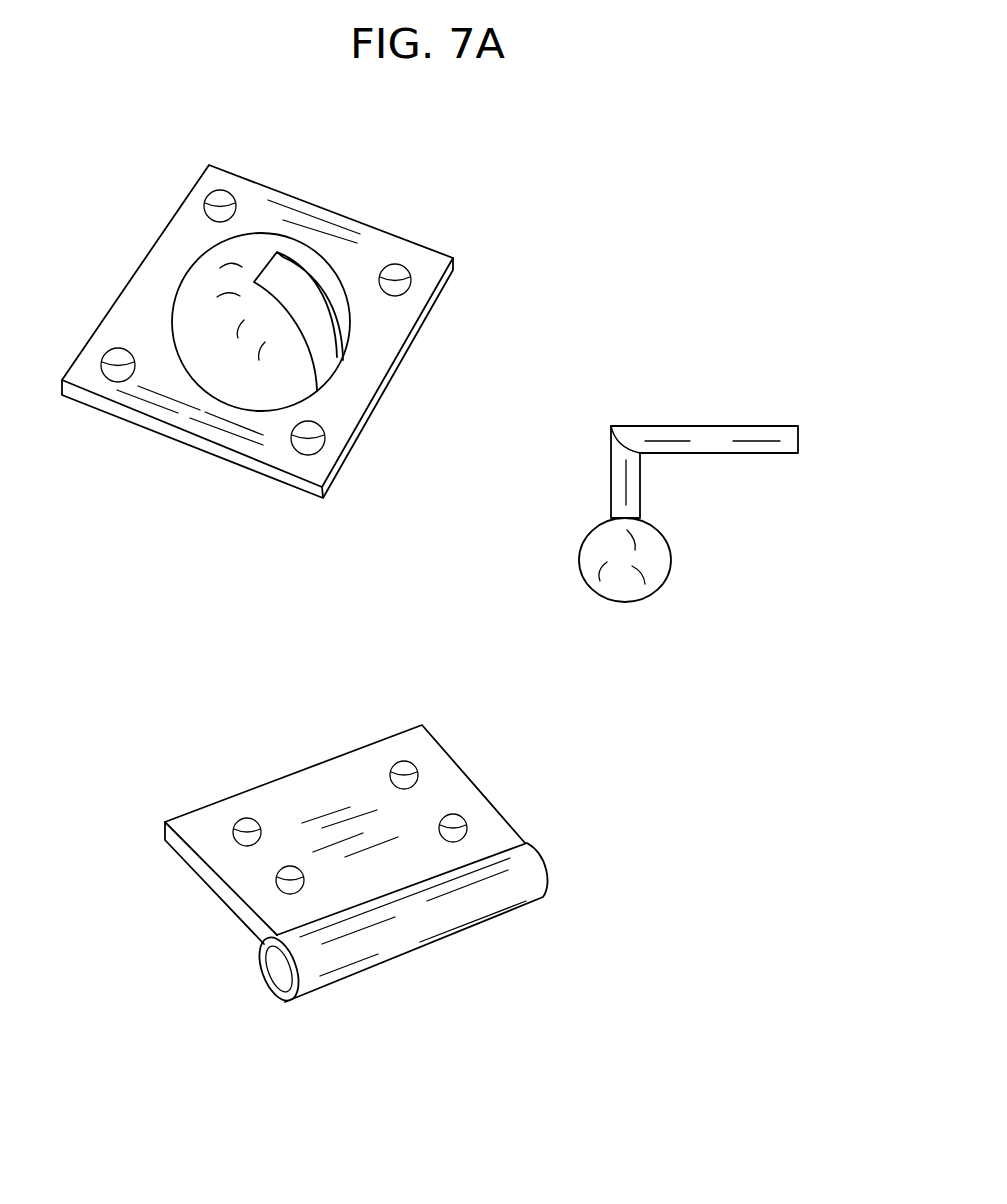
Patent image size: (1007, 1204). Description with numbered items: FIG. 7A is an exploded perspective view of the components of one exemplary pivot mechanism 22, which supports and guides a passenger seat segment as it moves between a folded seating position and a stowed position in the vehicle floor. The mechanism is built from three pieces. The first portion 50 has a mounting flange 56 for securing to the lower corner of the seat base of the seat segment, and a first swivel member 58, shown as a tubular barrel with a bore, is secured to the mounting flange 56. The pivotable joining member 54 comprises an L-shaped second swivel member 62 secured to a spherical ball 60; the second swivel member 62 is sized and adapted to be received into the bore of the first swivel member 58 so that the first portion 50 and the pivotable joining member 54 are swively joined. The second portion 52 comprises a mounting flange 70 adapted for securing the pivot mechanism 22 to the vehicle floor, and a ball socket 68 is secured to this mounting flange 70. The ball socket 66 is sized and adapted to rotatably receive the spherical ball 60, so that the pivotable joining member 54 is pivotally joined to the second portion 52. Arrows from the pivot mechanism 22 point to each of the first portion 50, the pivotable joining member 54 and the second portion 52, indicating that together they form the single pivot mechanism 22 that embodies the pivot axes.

The pivot mechanism 22 is at (477, 550).
The first portion 50 is at (410, 845).
The second portion 52 is at (300, 318).
The pivotable joining member 54 is at (712, 497).
The mounting flange 56 is at (328, 788).
The first swivel member 58 is at (367, 938).
The spherical ball 60 is at (655, 548).
The second swivel member 62 is at (715, 440).
The ball socket 66 is at (230, 370).
The ball socket 68 is at (305, 314).
The mounting flange 70 is at (153, 283).